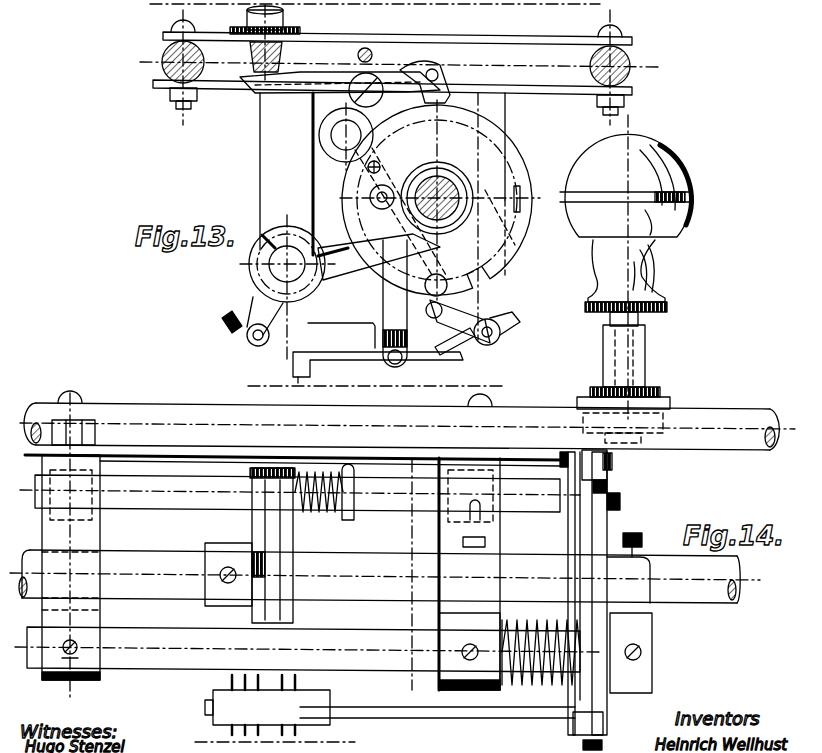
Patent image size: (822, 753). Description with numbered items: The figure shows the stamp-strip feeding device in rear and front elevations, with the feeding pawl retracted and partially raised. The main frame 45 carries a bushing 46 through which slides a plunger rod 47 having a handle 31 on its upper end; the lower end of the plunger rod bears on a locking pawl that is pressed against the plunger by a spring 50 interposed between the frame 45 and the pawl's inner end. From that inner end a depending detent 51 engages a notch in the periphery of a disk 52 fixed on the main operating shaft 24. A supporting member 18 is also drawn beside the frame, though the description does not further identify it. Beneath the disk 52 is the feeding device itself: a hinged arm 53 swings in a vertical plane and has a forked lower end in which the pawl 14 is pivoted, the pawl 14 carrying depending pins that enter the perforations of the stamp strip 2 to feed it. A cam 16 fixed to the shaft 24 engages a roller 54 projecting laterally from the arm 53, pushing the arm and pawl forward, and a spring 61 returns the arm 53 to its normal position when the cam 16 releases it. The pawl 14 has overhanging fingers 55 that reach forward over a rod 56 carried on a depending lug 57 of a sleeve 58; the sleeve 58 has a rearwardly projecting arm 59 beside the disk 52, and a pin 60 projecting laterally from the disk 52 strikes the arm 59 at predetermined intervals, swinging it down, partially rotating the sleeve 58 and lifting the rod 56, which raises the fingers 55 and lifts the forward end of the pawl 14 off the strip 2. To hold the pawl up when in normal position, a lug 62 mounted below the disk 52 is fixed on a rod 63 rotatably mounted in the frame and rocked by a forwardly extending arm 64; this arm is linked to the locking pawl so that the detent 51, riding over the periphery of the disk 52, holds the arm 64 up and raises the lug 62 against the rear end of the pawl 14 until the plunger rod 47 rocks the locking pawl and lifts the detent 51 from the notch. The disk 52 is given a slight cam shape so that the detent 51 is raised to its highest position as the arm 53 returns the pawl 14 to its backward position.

In FIG. 13, the stamp strip 2 is at (495, 387).
In FIG. 13, the pawl 14 is at (292, 366).
In FIG. 14, the pawl 14 is at (226, 727).
In FIG. 13, the cam 16 is at (510, 243).
In FIG. 14, the cam 16 is at (254, 534).
In FIG. 13, the supporting bar 18 is at (283, 93).
In FIG. 13, the main operating shaft 24 is at (455, 193).
In FIG. 14, the main operating shaft 24 is at (353, 562).
In FIG. 13, the handle 31 is at (690, 190).
In FIG. 13, the frame 45 is at (515, 31).
In FIG. 13, the bushing 46 is at (288, 22).
In FIG. 13, the plunger rod 47 is at (640, 318).
In FIG. 13, the spring 50 is at (413, 46).
In FIG. 13, the detent 51 is at (438, 93).
In FIG. 13, the disk 52 is at (507, 147).
In FIG. 14, the disk 52 is at (602, 525).
In FIG. 13, the hinged arm 53 is at (406, 345).
In FIG. 13, the roller 54 is at (370, 193).
In FIG. 13, the overhanging fingers 55 is at (340, 326).
In FIG. 13, the rod 56 is at (248, 338).
In FIG. 13, the depending lug 57 is at (258, 305).
In FIG. 13, the sleeve 58 is at (255, 268).
In FIG. 13, the arm 59 is at (379, 257).
In FIG. 13, the pin 60 is at (442, 278).
In FIG. 13, the spring 61 is at (362, 170).
In FIG. 13, the lug 62 is at (460, 346).
In FIG. 13, the rod 63 is at (503, 326).
In FIG. 13, the arm 64 is at (458, 321).